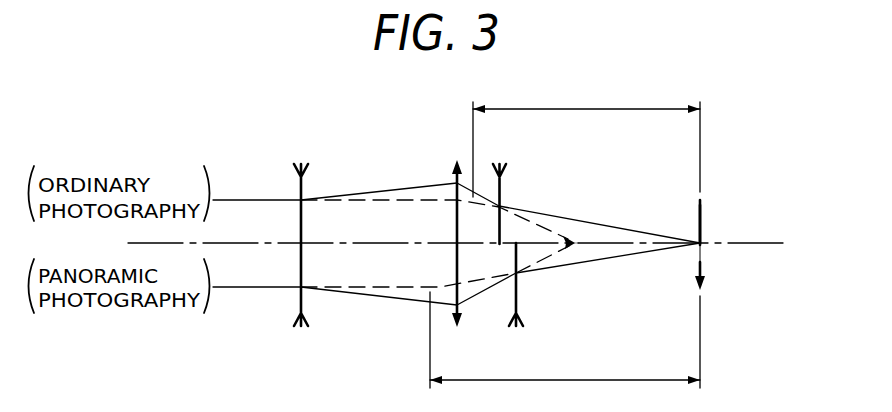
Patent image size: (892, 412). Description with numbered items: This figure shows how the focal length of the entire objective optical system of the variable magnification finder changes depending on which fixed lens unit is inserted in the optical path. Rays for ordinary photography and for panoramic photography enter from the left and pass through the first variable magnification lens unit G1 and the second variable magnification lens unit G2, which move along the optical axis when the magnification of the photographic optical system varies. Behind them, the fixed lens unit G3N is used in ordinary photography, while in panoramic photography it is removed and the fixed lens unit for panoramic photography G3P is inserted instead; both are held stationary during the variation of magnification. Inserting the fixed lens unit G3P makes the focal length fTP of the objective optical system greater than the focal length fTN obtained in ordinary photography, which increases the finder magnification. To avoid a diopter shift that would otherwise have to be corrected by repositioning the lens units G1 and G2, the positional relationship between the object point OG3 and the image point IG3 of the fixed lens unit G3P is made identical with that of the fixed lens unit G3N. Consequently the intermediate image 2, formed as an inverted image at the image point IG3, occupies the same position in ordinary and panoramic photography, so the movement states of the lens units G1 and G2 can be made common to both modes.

The intermediate image 2 is at (703, 212).
The first variable magnification lens unit G1 is at (297, 186).
The second variable magnification lens unit G2 is at (450, 181).
The fixed lens unit G3N is at (502, 188).
The fixed lens unit for panoramic photography G3P is at (518, 303).
The object point OG3 is at (565, 249).
The image point IG3 is at (703, 241).
The focal length in ordinary photography fTN is at (586, 140).
The focal length in panoramic photography fTP is at (565, 340).